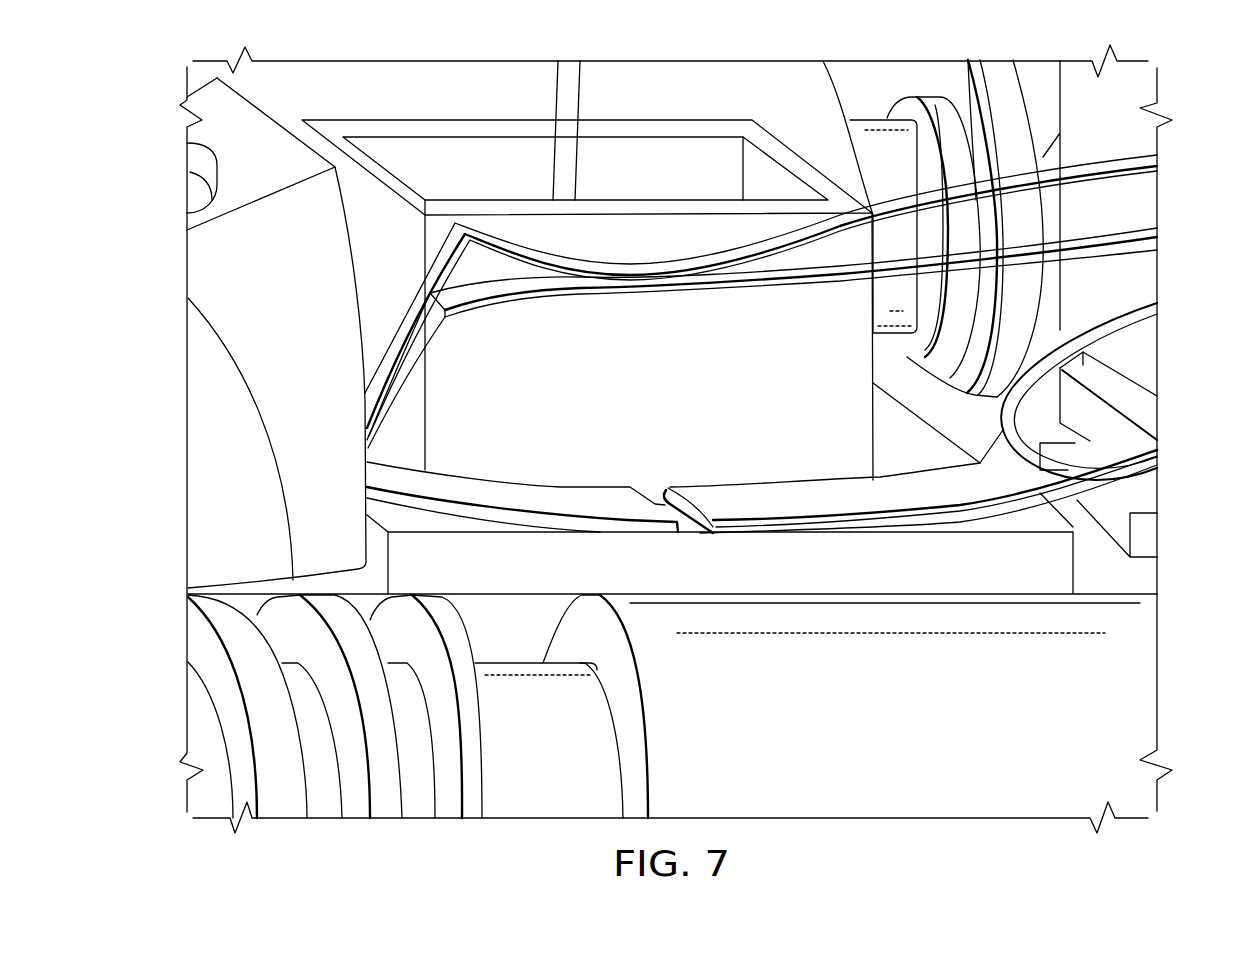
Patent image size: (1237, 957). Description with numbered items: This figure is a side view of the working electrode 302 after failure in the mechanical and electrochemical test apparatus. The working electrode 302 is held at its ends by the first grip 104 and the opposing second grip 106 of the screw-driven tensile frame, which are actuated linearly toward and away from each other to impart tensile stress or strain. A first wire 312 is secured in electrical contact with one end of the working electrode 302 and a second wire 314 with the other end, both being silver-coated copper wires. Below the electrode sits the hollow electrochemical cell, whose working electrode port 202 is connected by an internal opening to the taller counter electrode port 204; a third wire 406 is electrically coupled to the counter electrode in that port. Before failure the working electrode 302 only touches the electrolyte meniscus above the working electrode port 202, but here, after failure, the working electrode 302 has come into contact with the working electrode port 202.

The first grip 104 is at (241, 350).
The second grip 106 is at (1143, 415).
The working electrode port 202 is at (603, 547).
The counter electrode port 204 is at (430, 127).
The working electrode 302 is at (748, 493).
The first wire 312 is at (658, 263).
The second wire 314 is at (1113, 320).
The third wire 406 is at (557, 103).